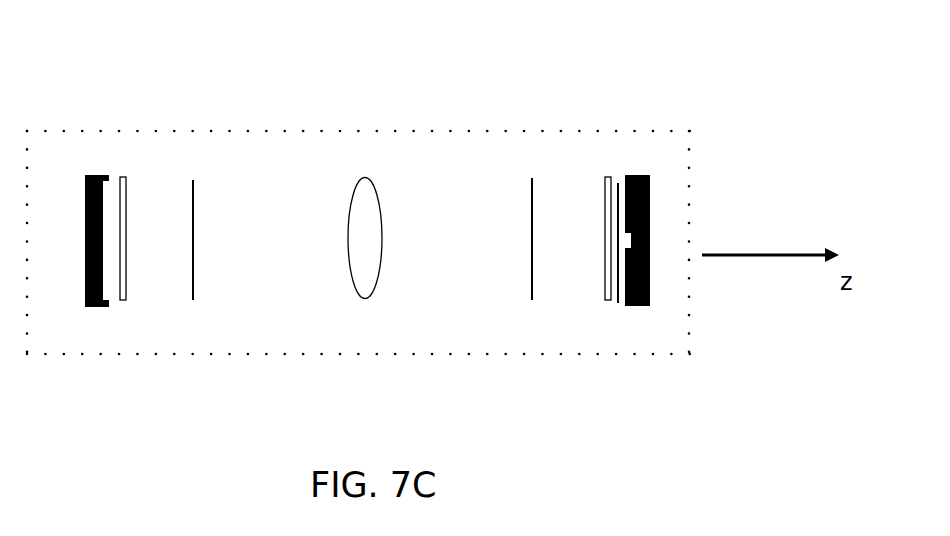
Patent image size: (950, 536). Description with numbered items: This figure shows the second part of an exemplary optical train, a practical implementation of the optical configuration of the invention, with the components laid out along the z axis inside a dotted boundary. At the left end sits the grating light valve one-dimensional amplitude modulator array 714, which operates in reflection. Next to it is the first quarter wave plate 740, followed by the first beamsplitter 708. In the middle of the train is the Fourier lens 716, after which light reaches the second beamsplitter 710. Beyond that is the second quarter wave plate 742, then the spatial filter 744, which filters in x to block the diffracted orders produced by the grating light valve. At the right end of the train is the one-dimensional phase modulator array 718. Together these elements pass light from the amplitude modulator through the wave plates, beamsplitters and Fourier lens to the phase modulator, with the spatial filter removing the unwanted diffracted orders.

The grating light valve 1-D amplitude modulator array 714 is at (97, 307).
The first quarter wave plate 740 is at (122, 300).
The first beamsplitter 708 is at (193, 297).
The Fourier lens 716 is at (362, 285).
The second beamsplitter 710 is at (532, 285).
The second quarter wave plate 742 is at (605, 288).
The spatial filter 744 is at (618, 185).
The 1-D phase modulator array 718 is at (645, 305).